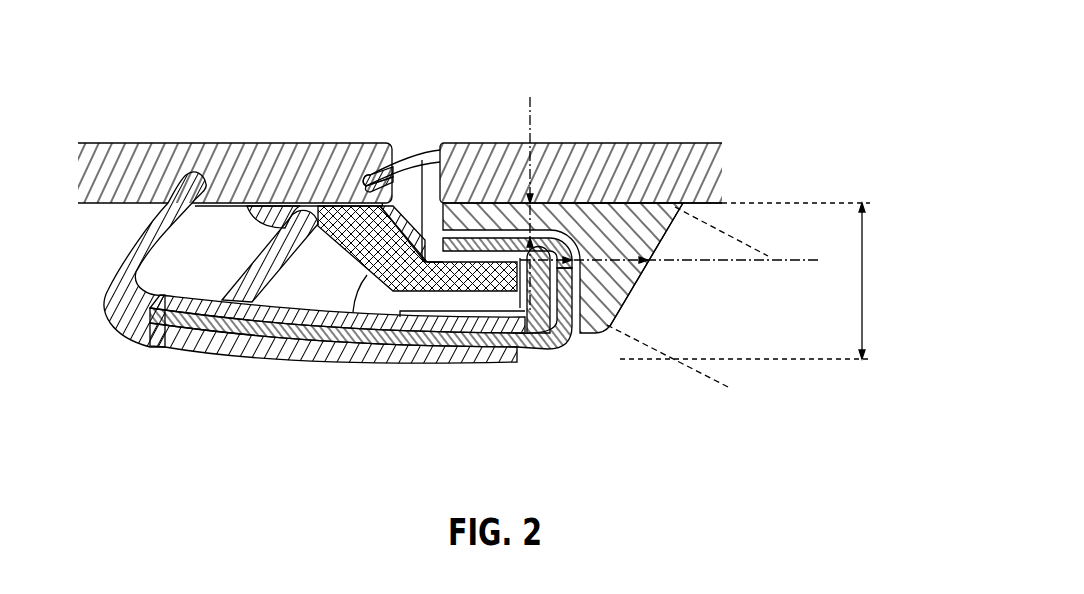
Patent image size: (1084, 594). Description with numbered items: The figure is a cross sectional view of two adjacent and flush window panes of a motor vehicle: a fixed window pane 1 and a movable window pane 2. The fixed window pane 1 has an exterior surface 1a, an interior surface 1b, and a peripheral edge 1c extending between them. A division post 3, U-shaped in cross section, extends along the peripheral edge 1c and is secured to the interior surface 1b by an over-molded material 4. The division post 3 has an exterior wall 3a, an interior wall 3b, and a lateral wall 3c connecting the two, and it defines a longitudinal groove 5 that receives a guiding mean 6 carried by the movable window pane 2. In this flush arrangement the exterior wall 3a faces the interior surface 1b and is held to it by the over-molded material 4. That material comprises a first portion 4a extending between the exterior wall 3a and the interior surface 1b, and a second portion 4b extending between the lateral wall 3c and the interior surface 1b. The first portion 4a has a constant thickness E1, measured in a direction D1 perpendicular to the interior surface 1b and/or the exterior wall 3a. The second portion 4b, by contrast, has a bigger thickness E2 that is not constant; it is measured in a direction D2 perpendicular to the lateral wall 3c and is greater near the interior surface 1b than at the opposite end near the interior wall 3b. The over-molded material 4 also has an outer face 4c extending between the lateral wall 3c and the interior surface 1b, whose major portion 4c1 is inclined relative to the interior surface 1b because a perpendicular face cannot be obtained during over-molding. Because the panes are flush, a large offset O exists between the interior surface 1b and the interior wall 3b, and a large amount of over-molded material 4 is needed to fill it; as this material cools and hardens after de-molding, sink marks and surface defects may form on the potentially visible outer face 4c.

The fixed window pane 1 is at (690, 134).
The exterior surface 1a is at (590, 165).
The interior surface 1b is at (743, 205).
The peripheral edge 1c is at (472, 145).
The movable window pane 2 is at (133, 141).
The division post 3 is at (352, 366).
The exterior wall 3a is at (430, 187).
The interior wall 3b is at (277, 352).
The lateral wall 3c is at (583, 334).
The over-molded material 4 is at (627, 314).
The first portion 4a is at (487, 252).
The second portion 4b is at (630, 273).
The outer face 4c is at (625, 295).
The major portion 4c1 is at (768, 258).
The longitudinal groove 5 is at (443, 305).
The guiding mean 6 is at (311, 356).
The direction D1 is at (530, 97).
The direction D2 is at (805, 262).
The thickness E1 is at (521, 330).
The thickness E2 is at (710, 261).
The offset O is at (868, 283).